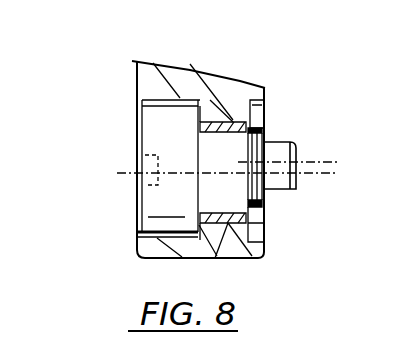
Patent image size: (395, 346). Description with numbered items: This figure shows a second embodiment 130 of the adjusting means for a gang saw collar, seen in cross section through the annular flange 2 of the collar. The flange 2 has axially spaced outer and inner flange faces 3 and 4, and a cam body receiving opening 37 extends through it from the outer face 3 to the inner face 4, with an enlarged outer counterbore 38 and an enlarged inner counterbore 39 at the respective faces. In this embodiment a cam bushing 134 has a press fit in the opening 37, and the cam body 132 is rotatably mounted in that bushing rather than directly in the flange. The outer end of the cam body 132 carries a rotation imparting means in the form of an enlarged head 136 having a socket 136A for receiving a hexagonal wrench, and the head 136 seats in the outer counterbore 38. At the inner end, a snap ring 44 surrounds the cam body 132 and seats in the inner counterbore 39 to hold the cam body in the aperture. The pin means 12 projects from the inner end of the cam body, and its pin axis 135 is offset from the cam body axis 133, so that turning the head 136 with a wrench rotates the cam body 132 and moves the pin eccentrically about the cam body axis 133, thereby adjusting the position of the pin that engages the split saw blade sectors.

The annular flange 2 is at (157, 61).
The outer flange face 3 is at (137, 75).
The inner flange face 4 is at (267, 89).
The pin means 12 is at (306, 137).
The cam body receiving opening 37 is at (217, 258).
The outer counterbore 38 is at (137, 106).
The inner counterbore 39 is at (266, 236).
The snap ring 44 is at (268, 122).
The second embodiment of the adjusting means 130 is at (132, 147).
The cam body 132 is at (210, 122).
The cam body axis 133 is at (318, 162).
The cam bushing 134 is at (232, 120).
The pin axis 135 is at (330, 174).
The enlarged head 136 is at (137, 223).
The socket 136A is at (138, 184).